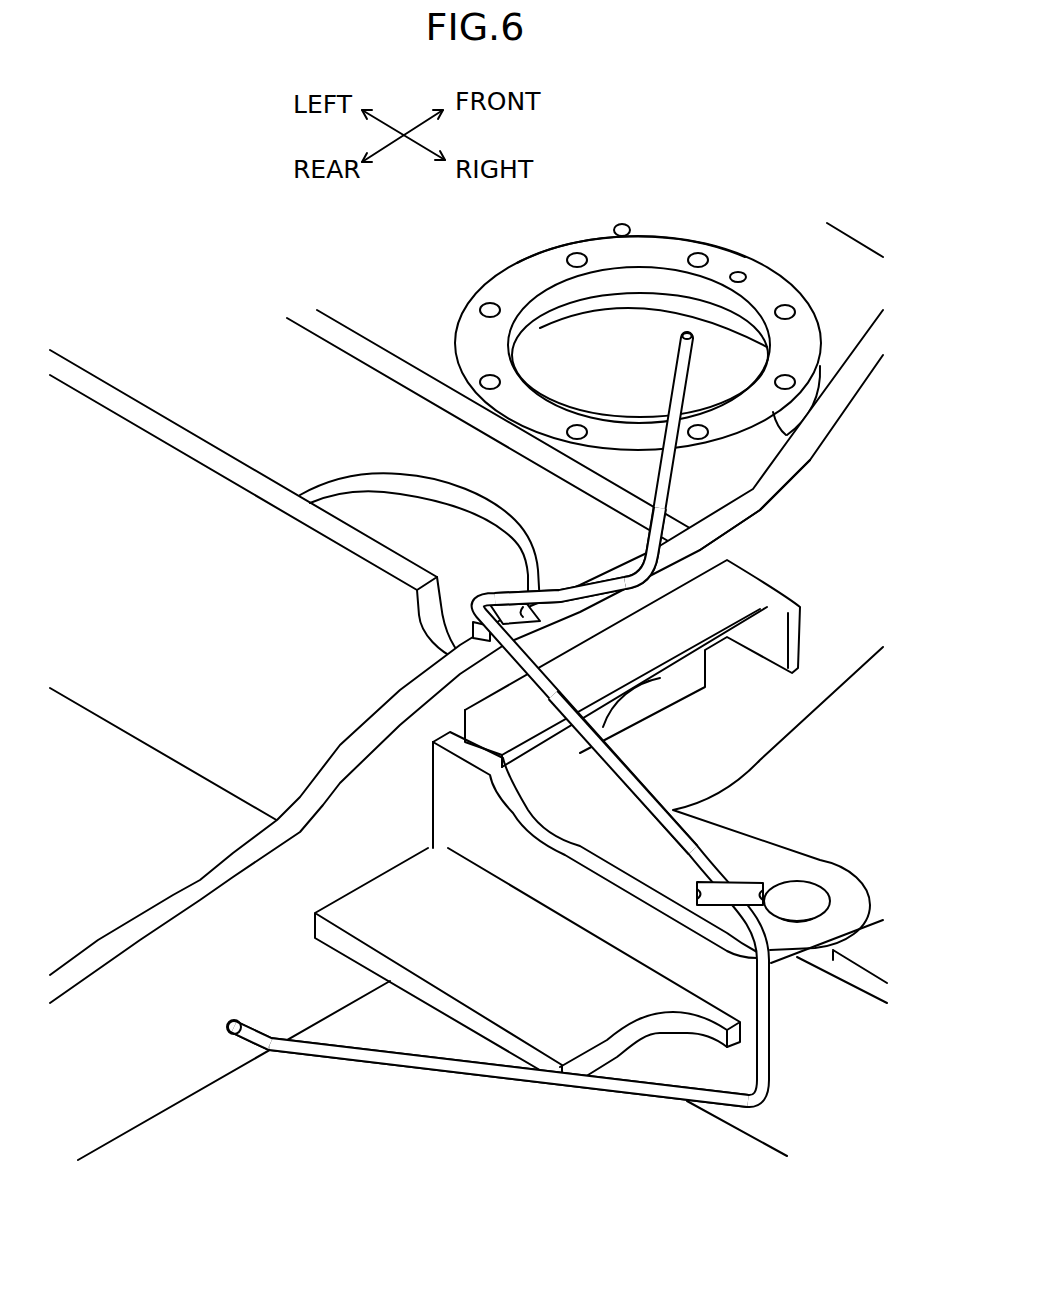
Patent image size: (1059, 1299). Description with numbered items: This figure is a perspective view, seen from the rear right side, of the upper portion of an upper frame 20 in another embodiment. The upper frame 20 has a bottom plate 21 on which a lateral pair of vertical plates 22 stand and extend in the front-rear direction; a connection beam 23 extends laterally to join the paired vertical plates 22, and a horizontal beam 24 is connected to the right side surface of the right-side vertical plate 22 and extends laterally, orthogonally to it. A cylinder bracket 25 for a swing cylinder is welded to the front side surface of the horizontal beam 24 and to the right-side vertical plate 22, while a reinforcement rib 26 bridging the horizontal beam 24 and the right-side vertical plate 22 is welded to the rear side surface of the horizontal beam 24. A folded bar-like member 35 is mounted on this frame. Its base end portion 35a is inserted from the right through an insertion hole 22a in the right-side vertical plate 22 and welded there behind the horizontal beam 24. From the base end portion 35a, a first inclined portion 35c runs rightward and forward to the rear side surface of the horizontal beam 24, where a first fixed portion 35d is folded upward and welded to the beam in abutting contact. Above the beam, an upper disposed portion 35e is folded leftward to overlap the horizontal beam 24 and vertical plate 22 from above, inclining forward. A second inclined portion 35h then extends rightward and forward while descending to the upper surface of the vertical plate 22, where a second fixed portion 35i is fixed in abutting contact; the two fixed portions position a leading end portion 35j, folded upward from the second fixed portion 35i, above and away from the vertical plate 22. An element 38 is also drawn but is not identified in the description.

The upper frame 20 is at (810, 124).
The bottom plate 21 is at (402, 407).
The vertical plate 22 is at (753, 487).
The insertion hole 22a is at (233, 1021).
The connection beam 23 is at (380, 548).
The horizontal beam 24 is at (600, 862).
The cylinder bracket 25 is at (823, 867).
The reinforcement rib 26 is at (423, 1002).
The bar-like member 35 is at (634, 548).
The base end portion 35a is at (240, 1040).
The first inclined portion 35c is at (468, 1072).
The first fixed portion 35d is at (773, 1030).
The upper disposed portion 35e is at (643, 778).
The second inclined portion 35h is at (553, 590).
The second fixed portion 35i is at (625, 589).
The leading end portion 35j is at (737, 530).
The clamp 38 is at (508, 611).